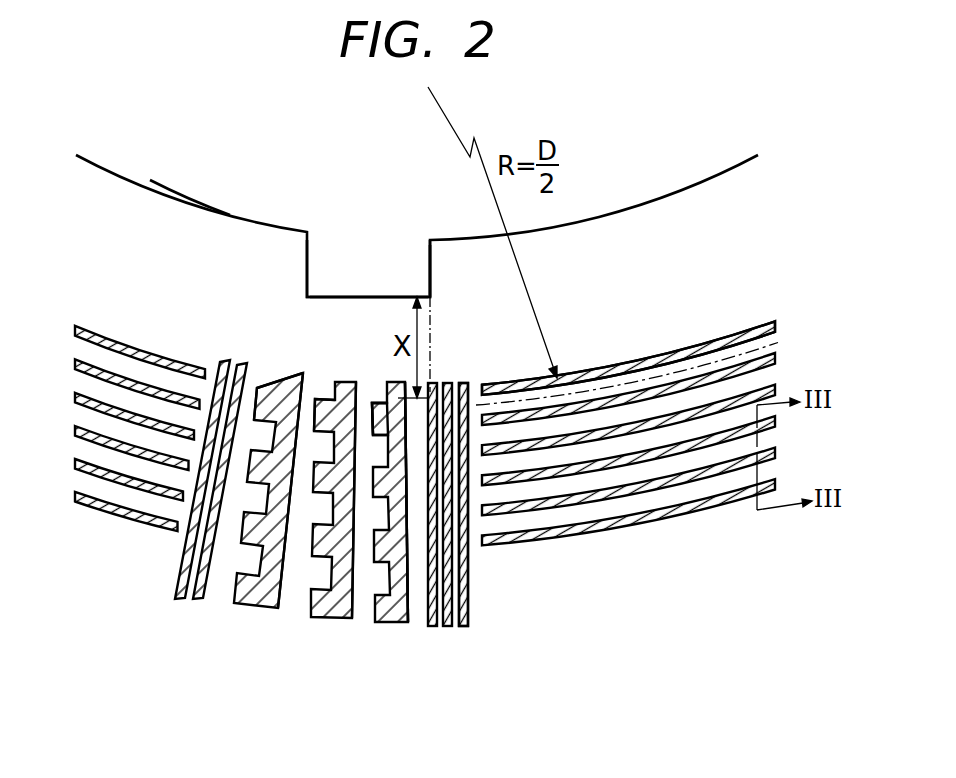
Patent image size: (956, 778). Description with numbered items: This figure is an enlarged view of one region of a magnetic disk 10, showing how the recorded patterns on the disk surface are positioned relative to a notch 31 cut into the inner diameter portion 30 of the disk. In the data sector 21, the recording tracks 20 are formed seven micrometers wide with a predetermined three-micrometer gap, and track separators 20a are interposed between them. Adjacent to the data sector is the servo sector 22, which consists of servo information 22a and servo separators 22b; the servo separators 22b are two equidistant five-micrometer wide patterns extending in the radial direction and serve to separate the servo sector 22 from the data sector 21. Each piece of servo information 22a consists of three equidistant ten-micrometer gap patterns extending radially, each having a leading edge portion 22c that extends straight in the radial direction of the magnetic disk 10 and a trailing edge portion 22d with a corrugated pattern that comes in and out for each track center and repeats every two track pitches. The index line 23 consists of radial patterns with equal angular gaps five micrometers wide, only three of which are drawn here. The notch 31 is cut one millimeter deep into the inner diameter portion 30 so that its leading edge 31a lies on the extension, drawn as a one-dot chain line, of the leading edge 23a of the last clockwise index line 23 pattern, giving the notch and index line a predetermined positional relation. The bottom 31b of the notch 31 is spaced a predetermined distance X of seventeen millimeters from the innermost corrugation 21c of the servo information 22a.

The magnetic disk 10 is at (197, 213).
The inner diameter portion 30 is at (143, 186).
The notch 31 is at (328, 237).
The leading edge of the notch 31a is at (428, 257).
The bottom of the notch 31b is at (368, 297).
The recording track 20 is at (645, 372).
The track separator 20a is at (701, 345).
The data sector 21 is at (62, 542).
The innermost corrugation 21c is at (329, 396).
The servo sector 22 is at (415, 678).
The servo information 22a is at (252, 608).
The servo separator 22b is at (170, 603).
The leading edge portion 22c is at (408, 585).
The trailing edge portion 22d is at (369, 401).
The index line 23 is at (428, 632).
The leading edge of the index line 23a is at (458, 383).